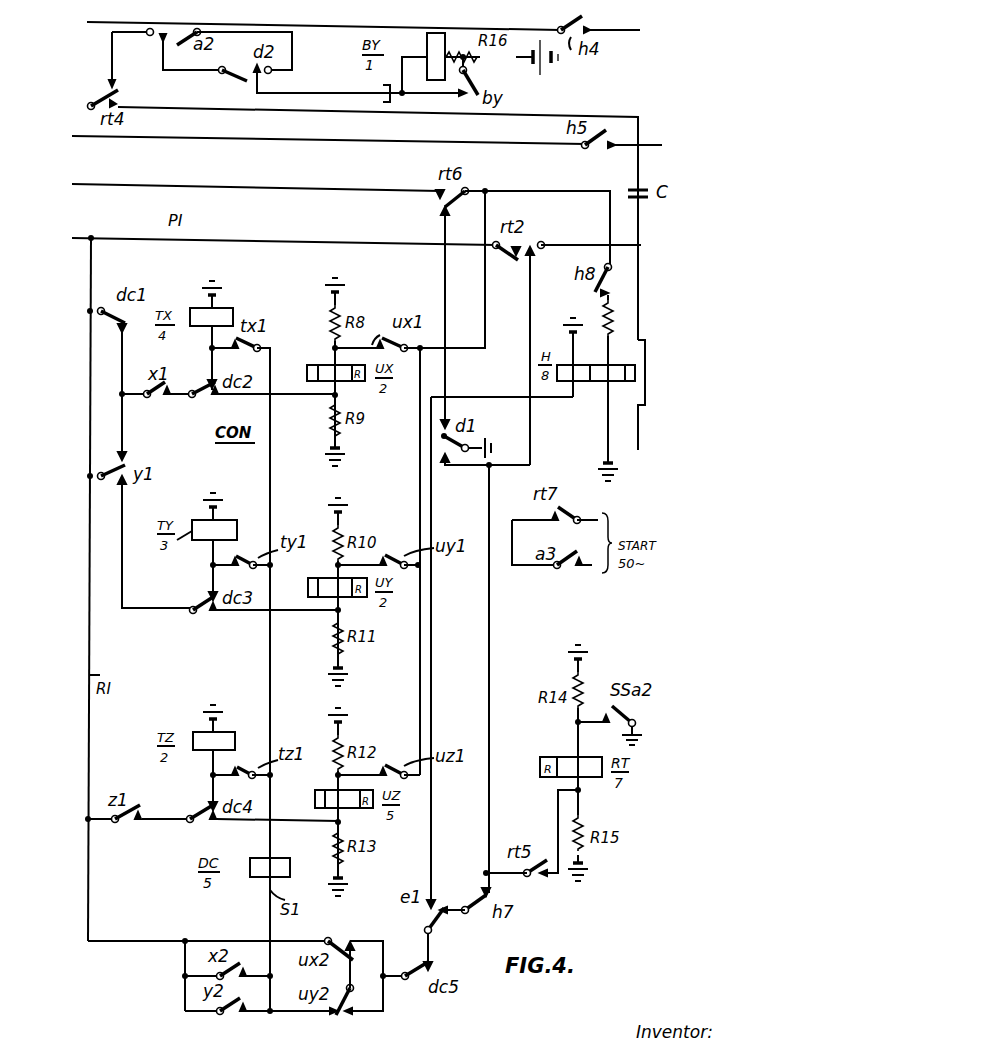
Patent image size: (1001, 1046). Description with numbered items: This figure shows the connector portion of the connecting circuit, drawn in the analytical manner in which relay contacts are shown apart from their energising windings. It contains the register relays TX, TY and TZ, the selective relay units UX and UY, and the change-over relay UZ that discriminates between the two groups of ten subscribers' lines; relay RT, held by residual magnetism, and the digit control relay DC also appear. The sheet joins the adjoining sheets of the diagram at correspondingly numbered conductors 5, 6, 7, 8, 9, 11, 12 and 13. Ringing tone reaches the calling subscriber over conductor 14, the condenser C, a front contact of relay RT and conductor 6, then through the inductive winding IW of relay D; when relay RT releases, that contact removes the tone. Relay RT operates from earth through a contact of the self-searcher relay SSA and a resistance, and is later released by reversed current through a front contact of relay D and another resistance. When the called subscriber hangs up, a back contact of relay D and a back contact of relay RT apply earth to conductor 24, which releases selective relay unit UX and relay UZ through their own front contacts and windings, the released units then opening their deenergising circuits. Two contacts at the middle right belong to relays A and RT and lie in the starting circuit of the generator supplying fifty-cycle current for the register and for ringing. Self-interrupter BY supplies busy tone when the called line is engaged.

The terminal line 5 is at (314, 22).
The conductor 6 is at (88, 106).
The terminal line 7 is at (322, 135).
The terminal line 8 is at (250, 184).
The terminal line 9 is at (278, 239).
The terminal 11 is at (627, 30).
The terminal 12 is at (650, 145).
The terminal 13 is at (607, 245).
The conductor 14 is at (638, 450).
The conductor 24 is at (485, 283).